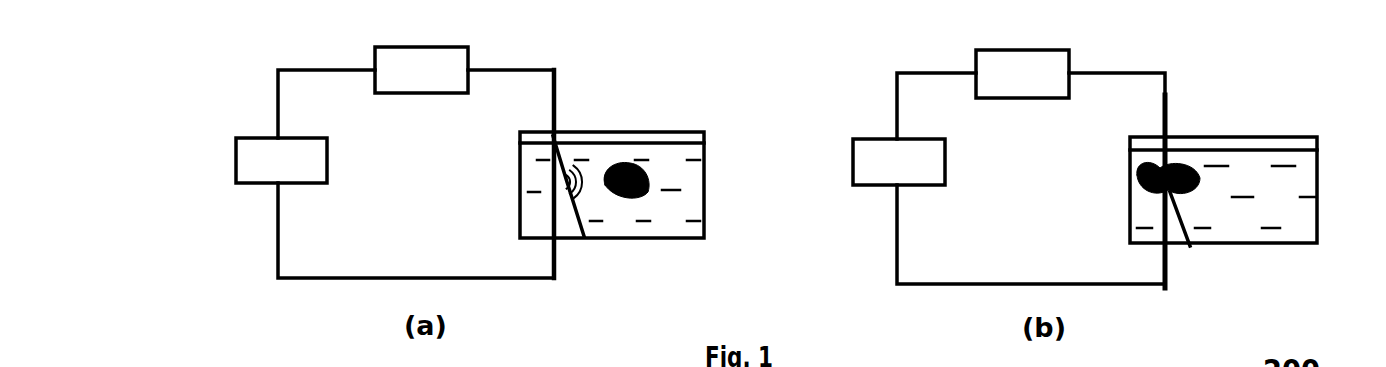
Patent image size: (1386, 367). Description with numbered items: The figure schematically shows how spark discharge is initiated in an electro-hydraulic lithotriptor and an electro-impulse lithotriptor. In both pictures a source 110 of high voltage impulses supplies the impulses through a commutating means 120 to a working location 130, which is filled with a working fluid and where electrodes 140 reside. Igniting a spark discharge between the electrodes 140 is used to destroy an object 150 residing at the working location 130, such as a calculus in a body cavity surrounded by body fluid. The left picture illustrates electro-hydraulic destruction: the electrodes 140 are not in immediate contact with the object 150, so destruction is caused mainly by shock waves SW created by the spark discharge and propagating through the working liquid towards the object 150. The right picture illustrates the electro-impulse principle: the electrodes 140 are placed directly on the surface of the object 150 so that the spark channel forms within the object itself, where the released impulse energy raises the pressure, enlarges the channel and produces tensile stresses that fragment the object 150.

The source of high voltage impulses 110 is at (590, 161).
The commutating means 120 is at (722, 72).
The working location 130 is at (1150, 223).
The electrodes 140 is at (1160, 258).
The object 150 is at (1267, 268).
The shock waves SW is at (590, 165).